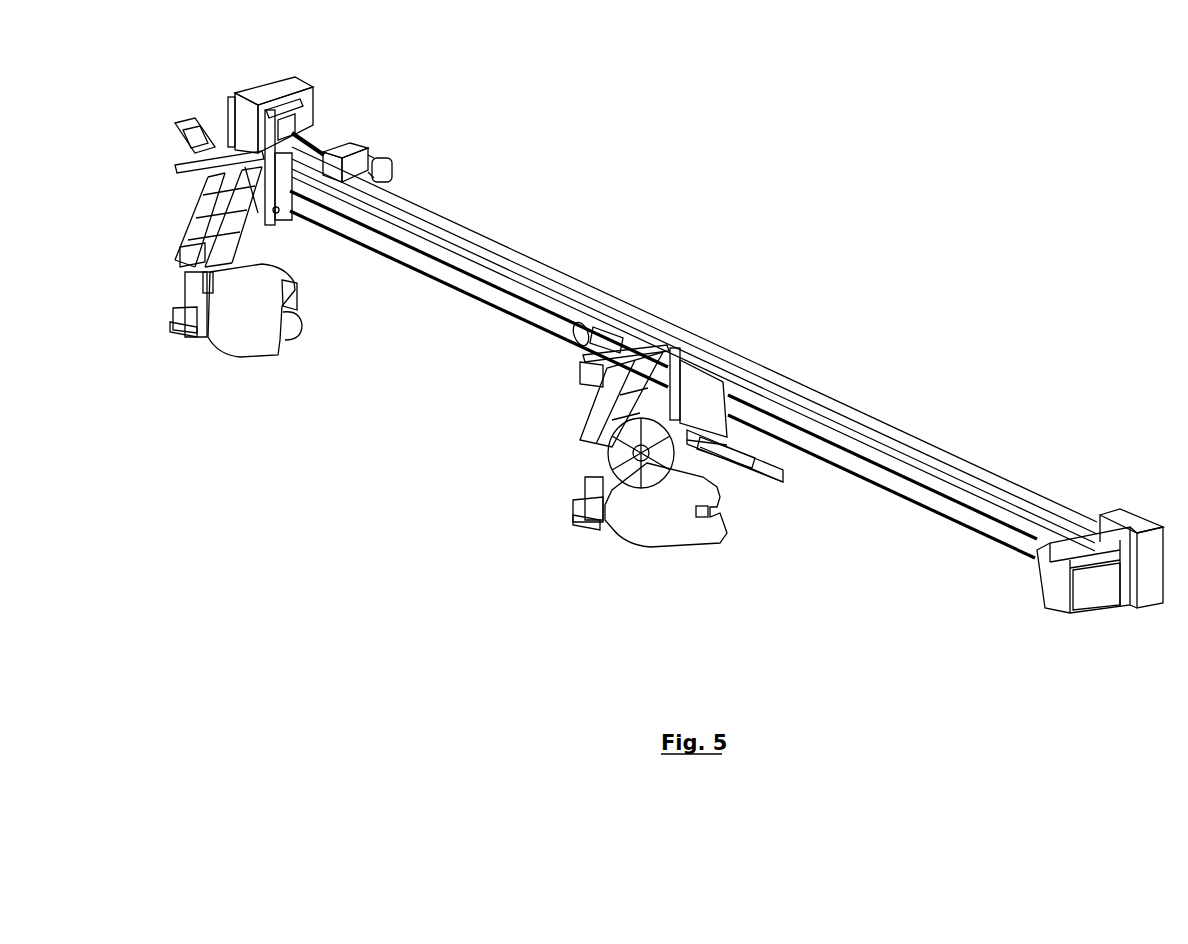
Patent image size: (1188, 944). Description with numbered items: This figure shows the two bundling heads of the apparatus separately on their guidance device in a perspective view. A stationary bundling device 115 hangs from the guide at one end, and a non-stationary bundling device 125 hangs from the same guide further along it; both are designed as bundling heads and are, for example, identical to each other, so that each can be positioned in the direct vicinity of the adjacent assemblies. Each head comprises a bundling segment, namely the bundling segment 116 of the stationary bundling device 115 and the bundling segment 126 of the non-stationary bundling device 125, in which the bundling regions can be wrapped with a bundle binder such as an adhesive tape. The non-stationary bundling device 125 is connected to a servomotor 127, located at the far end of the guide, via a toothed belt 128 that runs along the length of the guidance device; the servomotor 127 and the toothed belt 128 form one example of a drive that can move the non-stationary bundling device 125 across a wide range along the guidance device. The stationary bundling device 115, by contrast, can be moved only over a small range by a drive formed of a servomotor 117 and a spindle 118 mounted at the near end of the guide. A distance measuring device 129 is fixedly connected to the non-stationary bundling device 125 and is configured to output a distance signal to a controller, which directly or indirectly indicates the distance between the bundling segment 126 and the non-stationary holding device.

The stationary bundling device 115 is at (215, 333).
The bundling segment 116 is at (283, 310).
The servomotor 117 is at (377, 160).
The spindle 118 is at (317, 140).
The non-stationary bundling device 125 is at (617, 520).
The bundling segment 126 is at (713, 513).
The servomotor 127 is at (1052, 593).
The toothed belt 128 is at (943, 517).
The distance measuring device 129 is at (783, 477).